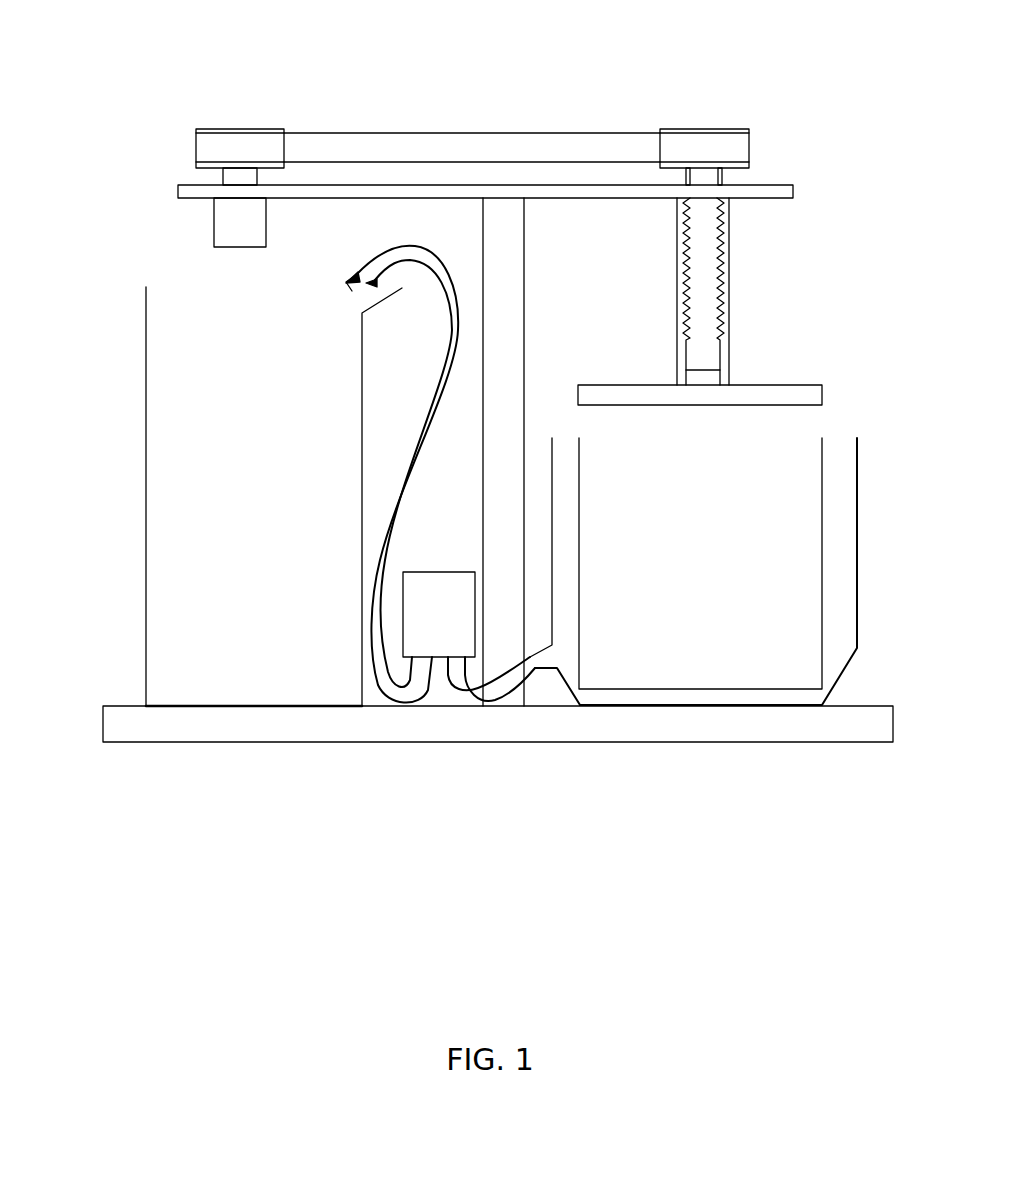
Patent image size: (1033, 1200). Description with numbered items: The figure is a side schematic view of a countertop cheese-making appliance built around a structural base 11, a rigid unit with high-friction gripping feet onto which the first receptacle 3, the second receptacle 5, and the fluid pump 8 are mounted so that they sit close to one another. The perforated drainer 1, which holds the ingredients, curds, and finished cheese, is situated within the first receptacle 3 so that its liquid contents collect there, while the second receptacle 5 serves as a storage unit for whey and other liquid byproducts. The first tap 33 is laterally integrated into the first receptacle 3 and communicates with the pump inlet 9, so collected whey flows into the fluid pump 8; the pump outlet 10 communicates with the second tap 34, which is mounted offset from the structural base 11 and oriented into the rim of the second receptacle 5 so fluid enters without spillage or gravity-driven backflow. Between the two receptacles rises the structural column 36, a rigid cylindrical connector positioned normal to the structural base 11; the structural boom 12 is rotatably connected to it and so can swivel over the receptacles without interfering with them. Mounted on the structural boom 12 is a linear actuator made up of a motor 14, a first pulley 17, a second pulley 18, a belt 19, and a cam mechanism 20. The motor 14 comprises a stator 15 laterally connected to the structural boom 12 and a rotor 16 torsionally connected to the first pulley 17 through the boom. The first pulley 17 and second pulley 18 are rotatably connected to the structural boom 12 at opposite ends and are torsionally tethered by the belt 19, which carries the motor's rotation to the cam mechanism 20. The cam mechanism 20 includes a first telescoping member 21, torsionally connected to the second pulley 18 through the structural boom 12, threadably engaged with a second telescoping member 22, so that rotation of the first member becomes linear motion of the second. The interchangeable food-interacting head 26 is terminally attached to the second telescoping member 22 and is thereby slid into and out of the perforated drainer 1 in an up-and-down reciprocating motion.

The perforated drainer 1 is at (822, 567).
The first receptacle 3 is at (858, 462).
The second receptacle 5 is at (145, 373).
The fluid pump 8 is at (430, 587).
The pump inlet 9 is at (448, 672).
The pump outlet 10 is at (432, 680).
The structural base 11 is at (293, 728).
The structural boom 12 is at (585, 192).
The motor 14 is at (424, 108).
The stator 15 is at (218, 228).
The rotor 16 is at (225, 180).
The first pulley 17 is at (218, 132).
The second pulley 18 is at (707, 132).
The belt 19 is at (455, 147).
The cam mechanism 20 is at (697, 291).
The first telescoping member 21 is at (700, 352).
The second telescoping member 22 is at (678, 270).
The interchangeable food-interacting head 26 is at (810, 388).
The first tap 33 is at (543, 668).
The second tap 34 is at (347, 290).
The structural column 36 is at (488, 421).